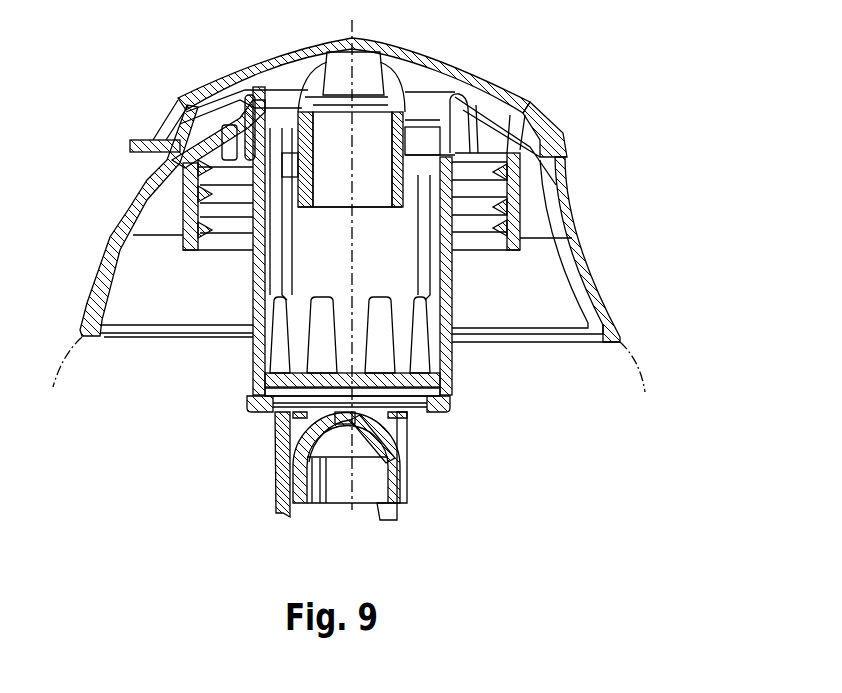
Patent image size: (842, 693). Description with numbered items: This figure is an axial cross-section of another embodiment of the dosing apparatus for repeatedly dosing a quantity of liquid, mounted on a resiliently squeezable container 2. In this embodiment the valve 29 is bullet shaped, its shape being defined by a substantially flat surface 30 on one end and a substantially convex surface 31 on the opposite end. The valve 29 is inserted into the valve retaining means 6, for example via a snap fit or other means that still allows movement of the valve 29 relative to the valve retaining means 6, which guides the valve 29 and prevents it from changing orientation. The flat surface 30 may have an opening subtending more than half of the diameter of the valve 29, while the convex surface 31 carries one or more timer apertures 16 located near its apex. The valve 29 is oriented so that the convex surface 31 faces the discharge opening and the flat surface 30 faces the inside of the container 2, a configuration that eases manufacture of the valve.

The container 2 is at (644, 384).
The valve retaining means 6 is at (397, 518).
The timer aperture 16 is at (292, 452).
The valve 29 is at (403, 477).
The flat surface 30 is at (320, 503).
The convex surface 31 is at (388, 424).